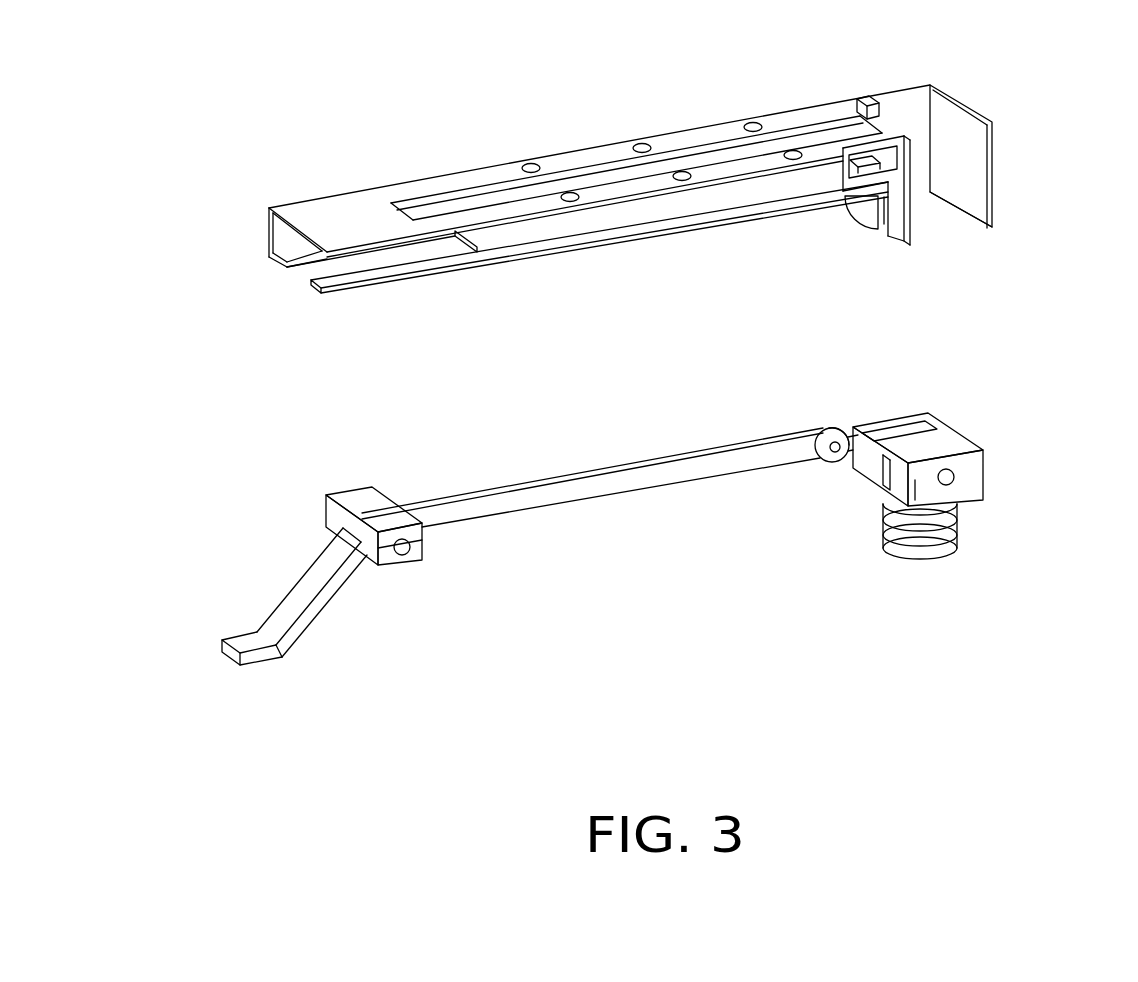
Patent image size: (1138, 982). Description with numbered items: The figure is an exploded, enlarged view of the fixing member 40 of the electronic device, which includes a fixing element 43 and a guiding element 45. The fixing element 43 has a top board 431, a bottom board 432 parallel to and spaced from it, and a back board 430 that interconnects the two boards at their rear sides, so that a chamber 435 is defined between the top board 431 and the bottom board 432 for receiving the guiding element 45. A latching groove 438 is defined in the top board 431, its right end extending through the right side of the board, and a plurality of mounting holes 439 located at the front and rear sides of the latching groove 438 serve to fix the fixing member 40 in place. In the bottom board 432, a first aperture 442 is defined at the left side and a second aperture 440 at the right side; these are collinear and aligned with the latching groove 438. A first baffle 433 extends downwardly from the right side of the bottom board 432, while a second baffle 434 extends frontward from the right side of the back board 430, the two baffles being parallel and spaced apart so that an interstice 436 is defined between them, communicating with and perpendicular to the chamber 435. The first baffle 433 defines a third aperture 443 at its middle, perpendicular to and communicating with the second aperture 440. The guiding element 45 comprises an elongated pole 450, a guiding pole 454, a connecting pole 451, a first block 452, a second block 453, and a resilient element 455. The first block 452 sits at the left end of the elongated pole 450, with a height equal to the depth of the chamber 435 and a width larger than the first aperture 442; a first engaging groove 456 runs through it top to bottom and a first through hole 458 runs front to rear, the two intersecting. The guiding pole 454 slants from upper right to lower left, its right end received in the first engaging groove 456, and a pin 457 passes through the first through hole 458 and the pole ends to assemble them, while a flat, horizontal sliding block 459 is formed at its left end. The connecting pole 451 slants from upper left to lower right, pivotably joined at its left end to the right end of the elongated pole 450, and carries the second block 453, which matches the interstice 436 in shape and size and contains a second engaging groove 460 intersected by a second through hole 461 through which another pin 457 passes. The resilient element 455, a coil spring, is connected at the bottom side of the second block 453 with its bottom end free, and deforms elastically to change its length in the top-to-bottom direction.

The fixing member 40 is at (350, 84).
The fixing element 43 is at (584, 116).
The guiding element 45 is at (586, 434).
The back board 430 is at (268, 224).
The top board 431 is at (323, 224).
The bottom board 432 is at (337, 282).
The first baffle 433 is at (898, 232).
The second baffle 434 is at (968, 128).
The chamber 435 is at (284, 242).
The interstice 436 is at (943, 222).
The latching groove 438 is at (823, 136).
The mounting holes 439 is at (750, 121).
The second aperture 440 is at (865, 162).
The first aperture 442 is at (304, 267).
The third aperture 443 is at (875, 212).
The elongated pole 450 is at (698, 466).
The connecting pole 451 is at (868, 426).
The first block 452 is at (357, 494).
The second block 453 is at (928, 424).
The guiding pole 454 is at (308, 588).
The resilient element 455 is at (958, 536).
The first engaging groove 456 is at (325, 537).
The pin 457 is at (955, 477).
The first through hole 458 is at (422, 544).
The sliding block 459 is at (248, 640).
The second engaging groove 460 is at (938, 440).
The second through hole 461 is at (915, 480).